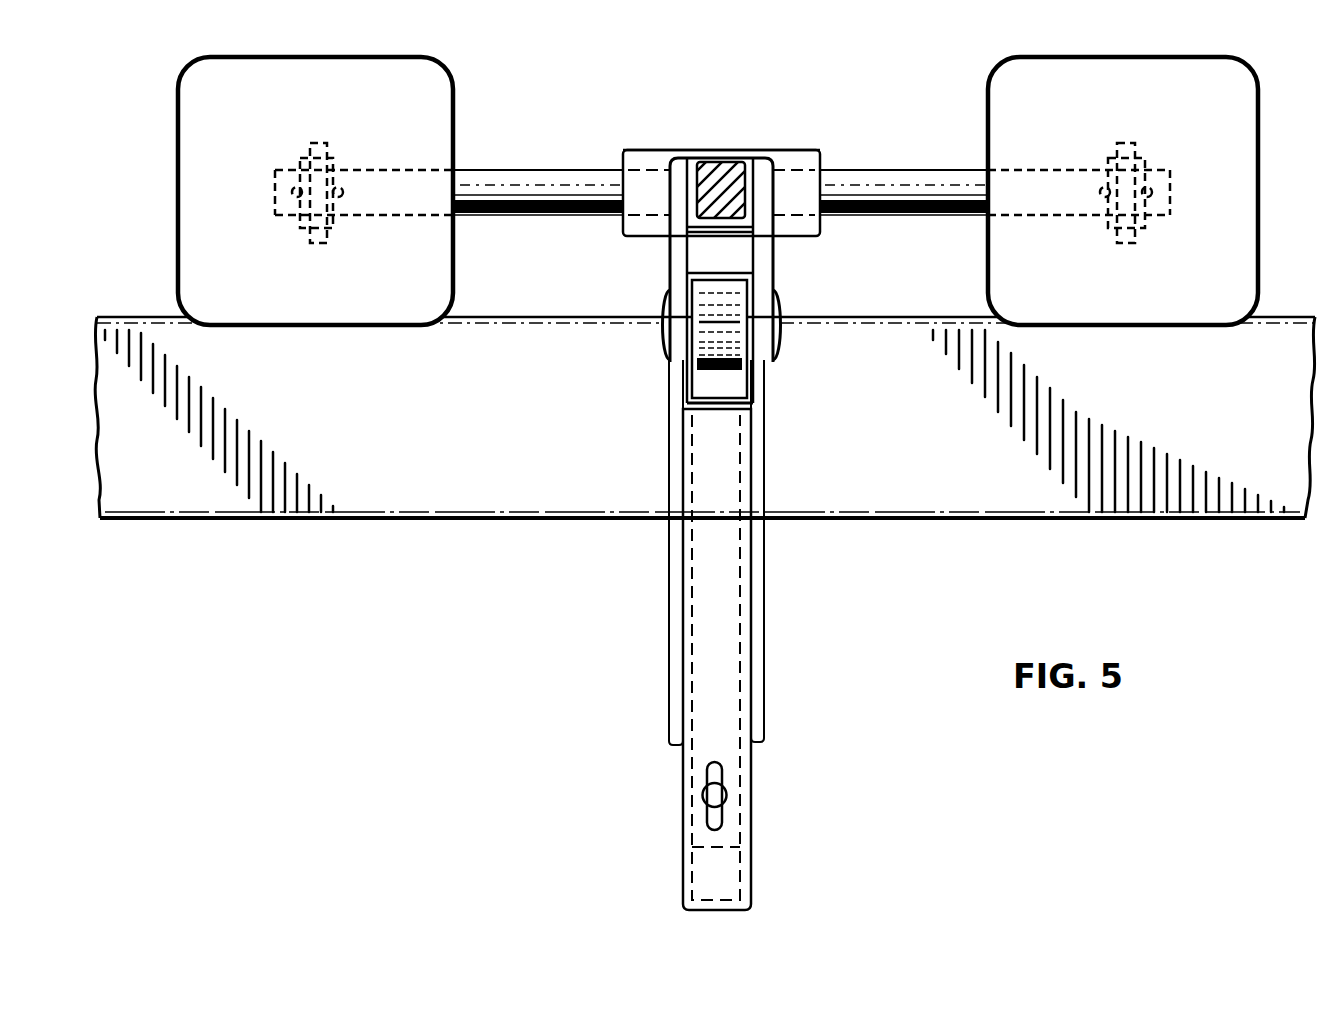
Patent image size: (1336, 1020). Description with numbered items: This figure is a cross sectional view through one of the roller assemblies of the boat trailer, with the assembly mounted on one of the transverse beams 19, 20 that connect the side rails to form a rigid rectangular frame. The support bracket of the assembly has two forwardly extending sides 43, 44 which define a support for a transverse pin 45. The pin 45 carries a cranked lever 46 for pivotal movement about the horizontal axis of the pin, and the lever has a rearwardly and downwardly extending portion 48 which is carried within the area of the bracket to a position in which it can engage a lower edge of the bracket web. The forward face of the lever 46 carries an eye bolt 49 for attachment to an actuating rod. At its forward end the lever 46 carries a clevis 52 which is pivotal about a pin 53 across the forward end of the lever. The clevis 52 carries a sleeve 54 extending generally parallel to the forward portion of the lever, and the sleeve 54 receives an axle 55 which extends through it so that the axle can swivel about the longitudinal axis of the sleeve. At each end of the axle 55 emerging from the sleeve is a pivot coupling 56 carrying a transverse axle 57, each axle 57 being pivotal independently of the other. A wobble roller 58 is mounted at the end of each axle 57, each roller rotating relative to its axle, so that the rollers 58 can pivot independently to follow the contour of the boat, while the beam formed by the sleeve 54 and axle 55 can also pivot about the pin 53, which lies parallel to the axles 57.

The transverse beam 19 is at (705, 445).
The transverse beam 20 is at (416, 522).
The forwardly extending side 43 is at (666, 569).
The forwardly extending side 44 is at (767, 615).
The transverse pin 45 is at (724, 367).
The cranked lever 46 is at (724, 504).
The rearwardly and downwardly extending portion 48 is at (730, 746).
The eye bolt 49 is at (704, 822).
The clevis 52 is at (666, 262).
The pin 53 is at (785, 302).
The sleeve 54 is at (738, 150).
The axle 55 is at (713, 160).
The pivot coupling 56 is at (821, 237).
The transverse axle 57 is at (513, 166).
The wobble roller 58 is at (459, 74).